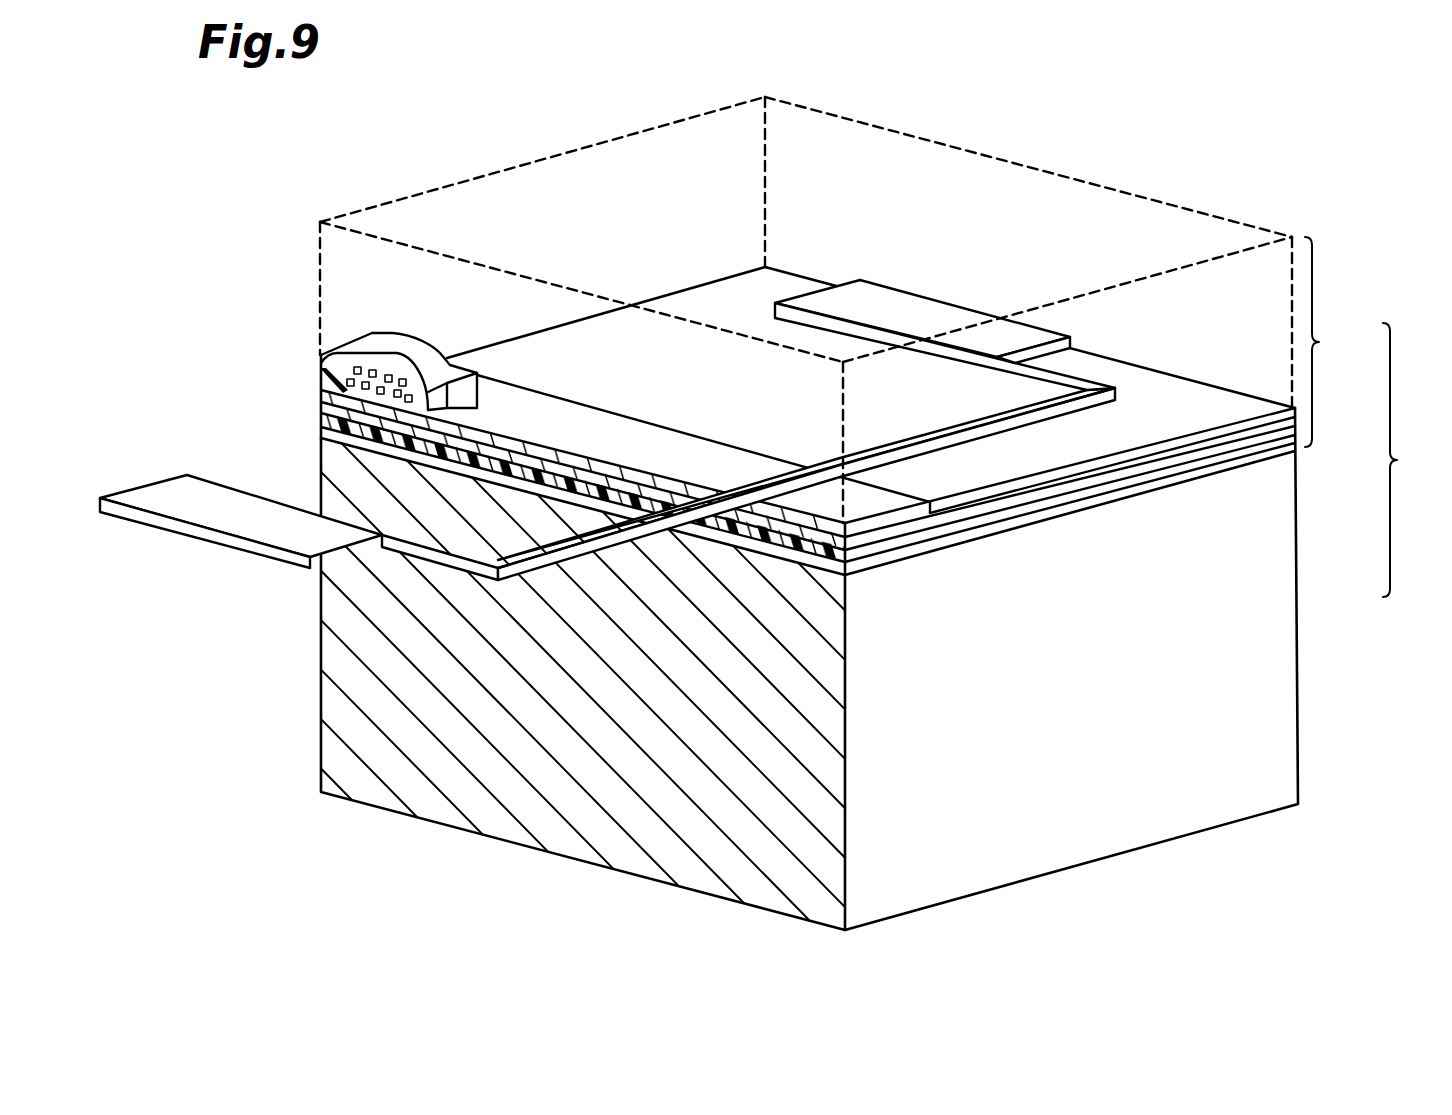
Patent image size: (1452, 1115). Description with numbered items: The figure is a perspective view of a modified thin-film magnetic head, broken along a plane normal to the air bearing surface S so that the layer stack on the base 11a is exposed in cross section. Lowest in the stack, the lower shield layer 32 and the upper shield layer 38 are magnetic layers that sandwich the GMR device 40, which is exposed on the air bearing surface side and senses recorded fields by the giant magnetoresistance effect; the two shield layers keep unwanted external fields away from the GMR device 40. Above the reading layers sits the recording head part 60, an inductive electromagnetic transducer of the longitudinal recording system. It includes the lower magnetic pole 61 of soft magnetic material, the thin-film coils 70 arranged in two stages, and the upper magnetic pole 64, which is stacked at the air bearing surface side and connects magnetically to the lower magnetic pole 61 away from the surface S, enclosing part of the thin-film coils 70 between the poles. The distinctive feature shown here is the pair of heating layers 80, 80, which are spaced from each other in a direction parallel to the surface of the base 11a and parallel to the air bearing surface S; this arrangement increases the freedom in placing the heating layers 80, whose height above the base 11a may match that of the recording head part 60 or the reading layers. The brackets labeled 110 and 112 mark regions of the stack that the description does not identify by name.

The base 11a is at (1283, 587).
The lower shield layer 32 is at (320, 430).
The GMR device 40 is at (320, 412).
The upper shield layer 38 is at (320, 393).
The recording head part 60 is at (346, 339).
The lower magnetic pole 61 is at (320, 374).
The upper magnetic pole 64 is at (373, 353).
The thin-film coils 70 is at (390, 376).
The heating layers 80 is at (158, 497).
The optical device portion 110 is at (1341, 342).
The substrate portion 112 is at (1417, 460).
The air bearing surface S is at (358, 202).